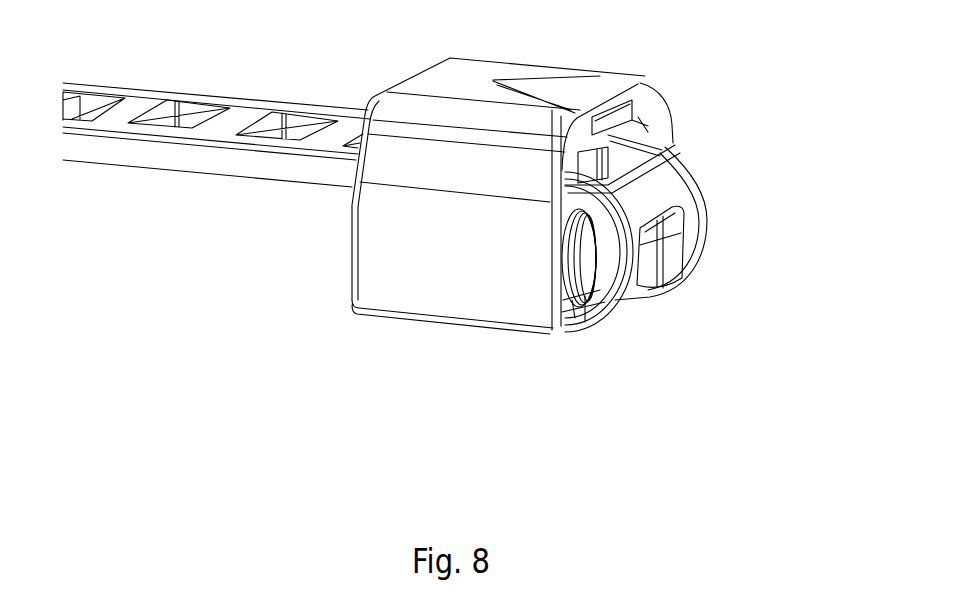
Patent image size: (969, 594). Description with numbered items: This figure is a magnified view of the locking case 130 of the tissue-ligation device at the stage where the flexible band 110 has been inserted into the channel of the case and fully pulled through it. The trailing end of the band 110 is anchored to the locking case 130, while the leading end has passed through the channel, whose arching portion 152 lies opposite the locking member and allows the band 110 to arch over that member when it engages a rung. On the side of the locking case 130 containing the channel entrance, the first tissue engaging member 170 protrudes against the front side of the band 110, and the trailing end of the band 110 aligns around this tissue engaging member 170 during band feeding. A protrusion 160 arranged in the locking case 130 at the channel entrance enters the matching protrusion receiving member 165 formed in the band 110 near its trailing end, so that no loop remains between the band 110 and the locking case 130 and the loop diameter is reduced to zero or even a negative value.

The band 110 is at (158, 152).
The locking case 130 is at (420, 293).
The arching portion 152 is at (608, 130).
The protrusion 160 is at (663, 265).
The protrusion receiving member 165 is at (681, 228).
The first tissue engaging member 170 is at (572, 260).